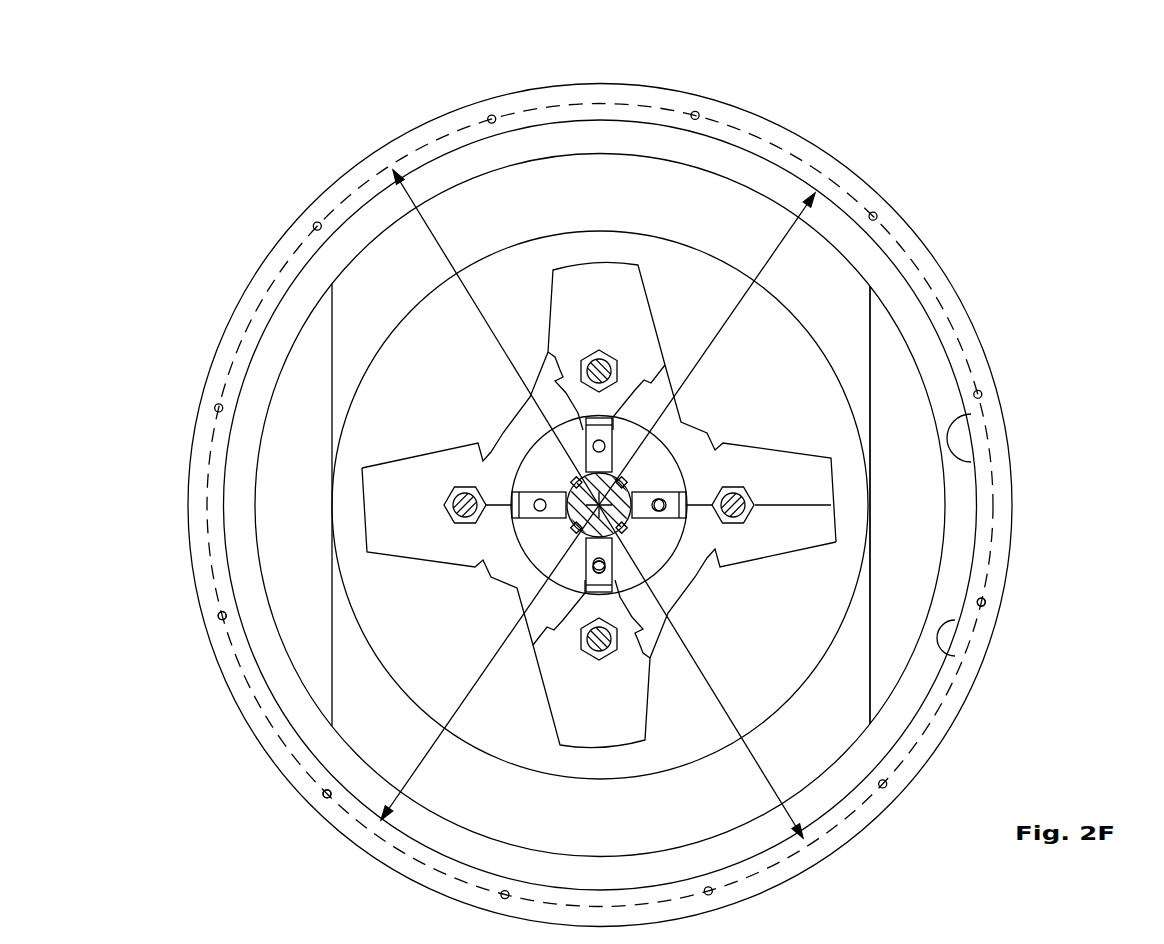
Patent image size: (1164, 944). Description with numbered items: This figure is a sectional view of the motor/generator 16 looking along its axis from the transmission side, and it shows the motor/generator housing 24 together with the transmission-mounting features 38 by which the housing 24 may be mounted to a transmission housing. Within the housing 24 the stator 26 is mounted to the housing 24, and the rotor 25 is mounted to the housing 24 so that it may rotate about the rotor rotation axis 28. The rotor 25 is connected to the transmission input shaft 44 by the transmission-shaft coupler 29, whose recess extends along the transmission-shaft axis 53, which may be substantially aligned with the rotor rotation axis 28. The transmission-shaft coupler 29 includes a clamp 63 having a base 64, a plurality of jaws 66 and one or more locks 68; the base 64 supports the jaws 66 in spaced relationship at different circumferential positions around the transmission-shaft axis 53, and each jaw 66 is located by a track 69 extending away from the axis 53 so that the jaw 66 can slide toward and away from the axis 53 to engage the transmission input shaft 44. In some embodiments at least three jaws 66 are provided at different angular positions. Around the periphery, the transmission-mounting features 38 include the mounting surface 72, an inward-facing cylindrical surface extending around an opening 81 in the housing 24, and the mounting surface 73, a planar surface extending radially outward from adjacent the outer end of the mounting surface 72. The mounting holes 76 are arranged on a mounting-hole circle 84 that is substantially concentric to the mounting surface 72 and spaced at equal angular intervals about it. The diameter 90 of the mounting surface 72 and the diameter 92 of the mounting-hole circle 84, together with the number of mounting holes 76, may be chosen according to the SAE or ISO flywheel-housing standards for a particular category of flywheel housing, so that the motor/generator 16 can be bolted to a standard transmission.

The motor/generator 16 is at (867, 150).
The motor/generator housing 24 is at (933, 258).
The rotor 25 is at (747, 438).
The stator 26 is at (373, 302).
The rotor rotation axis 28 is at (604, 570).
The transmission-shaft coupler 29 is at (667, 531).
The transmission-mounting features 38 is at (958, 652).
The transmission input shaft 44 is at (540, 578).
The transmission-shaft axis 53 is at (578, 478).
The clamp 63 is at (680, 440).
The base 64 is at (586, 437).
The jaws 66 is at (527, 498).
The locks 68 is at (665, 502).
The track 69 is at (570, 432).
The mounting surface 72 is at (972, 462).
The mounting surface 73 is at (955, 313).
The mounting holes 76 is at (323, 792).
The opening 81 is at (900, 570).
The mounting-hole circle 84 is at (358, 193).
The diameter of mounting surface 90 is at (779, 247).
The diameter of mounting-hole circle 92 is at (432, 233).